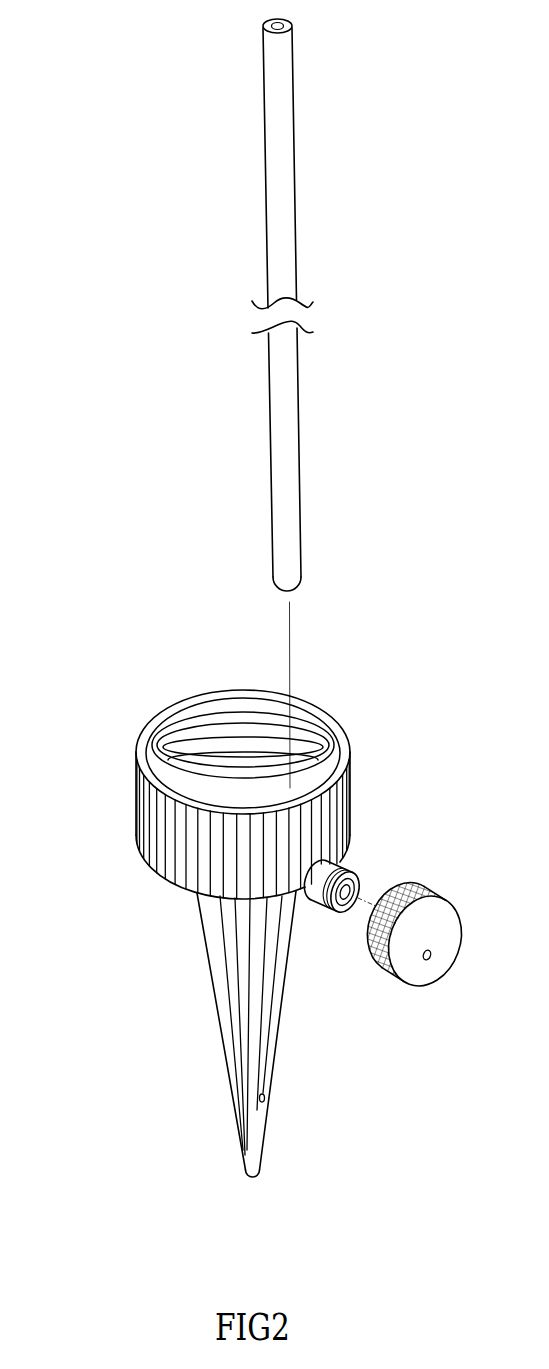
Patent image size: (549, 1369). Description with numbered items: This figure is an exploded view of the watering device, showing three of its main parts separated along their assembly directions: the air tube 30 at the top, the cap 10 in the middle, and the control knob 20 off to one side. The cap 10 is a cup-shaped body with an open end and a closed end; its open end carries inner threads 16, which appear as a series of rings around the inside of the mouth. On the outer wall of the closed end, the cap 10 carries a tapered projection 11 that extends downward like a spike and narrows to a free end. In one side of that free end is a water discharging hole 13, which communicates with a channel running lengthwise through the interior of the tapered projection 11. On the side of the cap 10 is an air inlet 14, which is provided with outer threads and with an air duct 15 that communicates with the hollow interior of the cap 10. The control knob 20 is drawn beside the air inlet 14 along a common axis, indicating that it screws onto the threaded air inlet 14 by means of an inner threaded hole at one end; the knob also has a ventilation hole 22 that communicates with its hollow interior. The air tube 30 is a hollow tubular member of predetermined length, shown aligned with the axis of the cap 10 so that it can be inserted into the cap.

The cap 10 is at (143, 840).
The tapered projection 11 is at (218, 1015).
The water discharging hole 13 is at (265, 1101).
The air inlet 14 is at (333, 908).
The air duct 15 is at (353, 872).
The inner threads 16 is at (171, 726).
The control knob 20 is at (449, 912).
The ventilation hole 22 is at (430, 957).
The air tube 30 is at (288, 167).